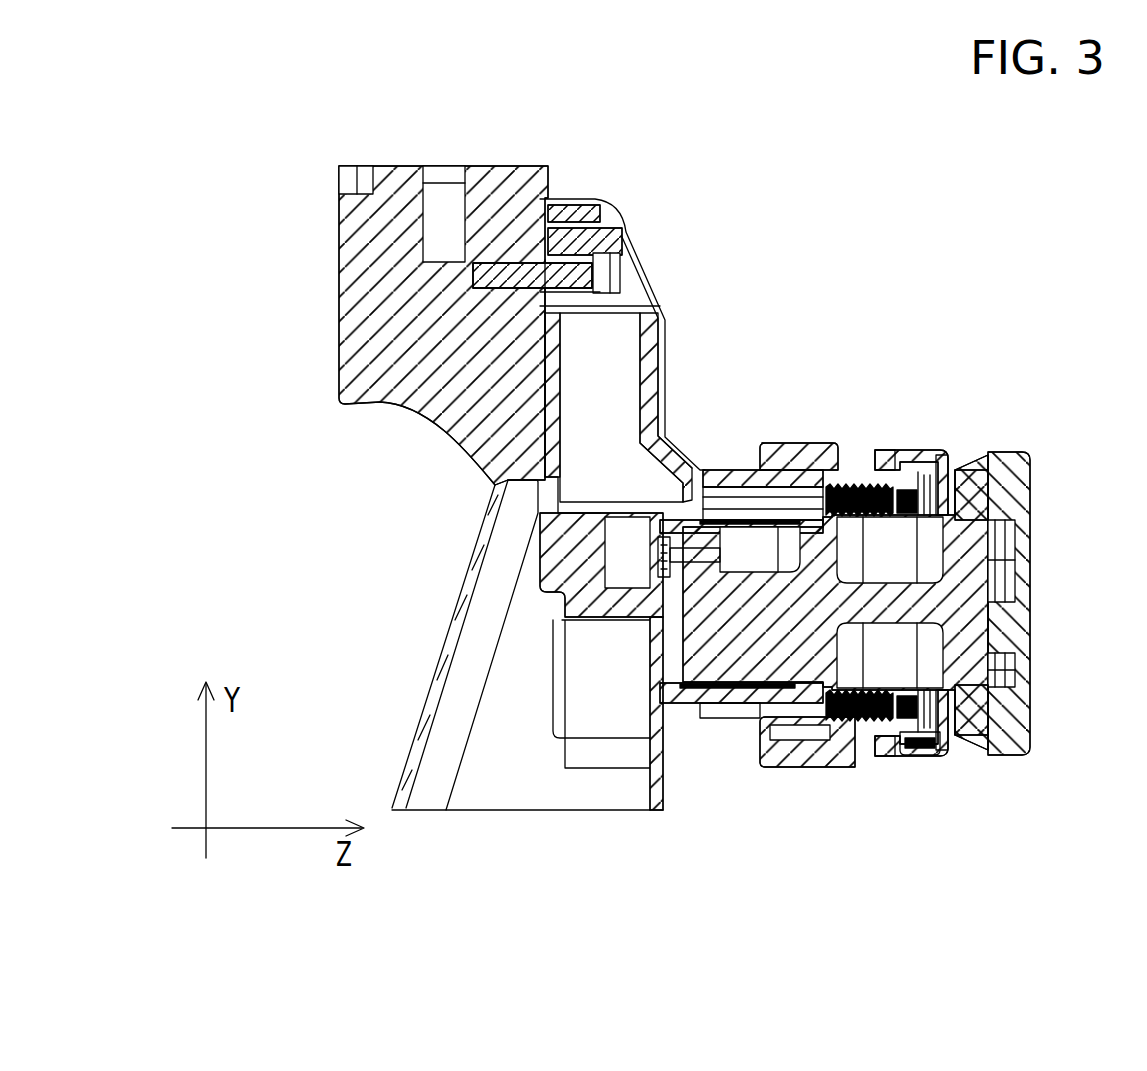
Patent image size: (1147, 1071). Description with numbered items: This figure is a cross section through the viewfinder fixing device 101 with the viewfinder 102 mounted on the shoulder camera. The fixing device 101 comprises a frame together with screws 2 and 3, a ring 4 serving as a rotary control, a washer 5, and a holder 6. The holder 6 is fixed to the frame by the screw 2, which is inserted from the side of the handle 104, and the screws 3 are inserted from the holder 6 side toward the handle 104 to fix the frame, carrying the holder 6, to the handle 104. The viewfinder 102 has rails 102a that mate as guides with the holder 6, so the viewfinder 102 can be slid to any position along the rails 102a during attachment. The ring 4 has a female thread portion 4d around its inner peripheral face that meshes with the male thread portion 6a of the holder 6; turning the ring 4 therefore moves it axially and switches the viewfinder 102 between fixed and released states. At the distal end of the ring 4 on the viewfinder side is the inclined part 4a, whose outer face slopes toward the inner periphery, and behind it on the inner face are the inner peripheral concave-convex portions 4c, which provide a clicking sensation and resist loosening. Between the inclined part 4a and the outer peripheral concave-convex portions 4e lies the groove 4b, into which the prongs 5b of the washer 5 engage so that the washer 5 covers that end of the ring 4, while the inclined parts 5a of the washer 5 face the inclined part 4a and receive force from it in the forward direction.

The handle 104 is at (398, 193).
The screws 3 is at (578, 272).
The viewfinder fixing device 101 is at (807, 333).
The ring 4 is at (808, 592).
The outer peripheral concave-convex portions 4e is at (797, 442).
The female thread portion 4d is at (845, 745).
The groove 4b is at (863, 486).
The inclined part 4a is at (918, 448).
The inner peripheral concave-convex portions 4c is at (915, 748).
The washer 5 is at (908, 530).
The prongs 5b is at (880, 448).
The inclined parts 5a is at (942, 456).
The holder 6 is at (945, 598).
The male thread portion 6a is at (865, 722).
The viewfinder 102 is at (1035, 438).
The rails 102a is at (970, 460).
The screw 2 is at (690, 548).